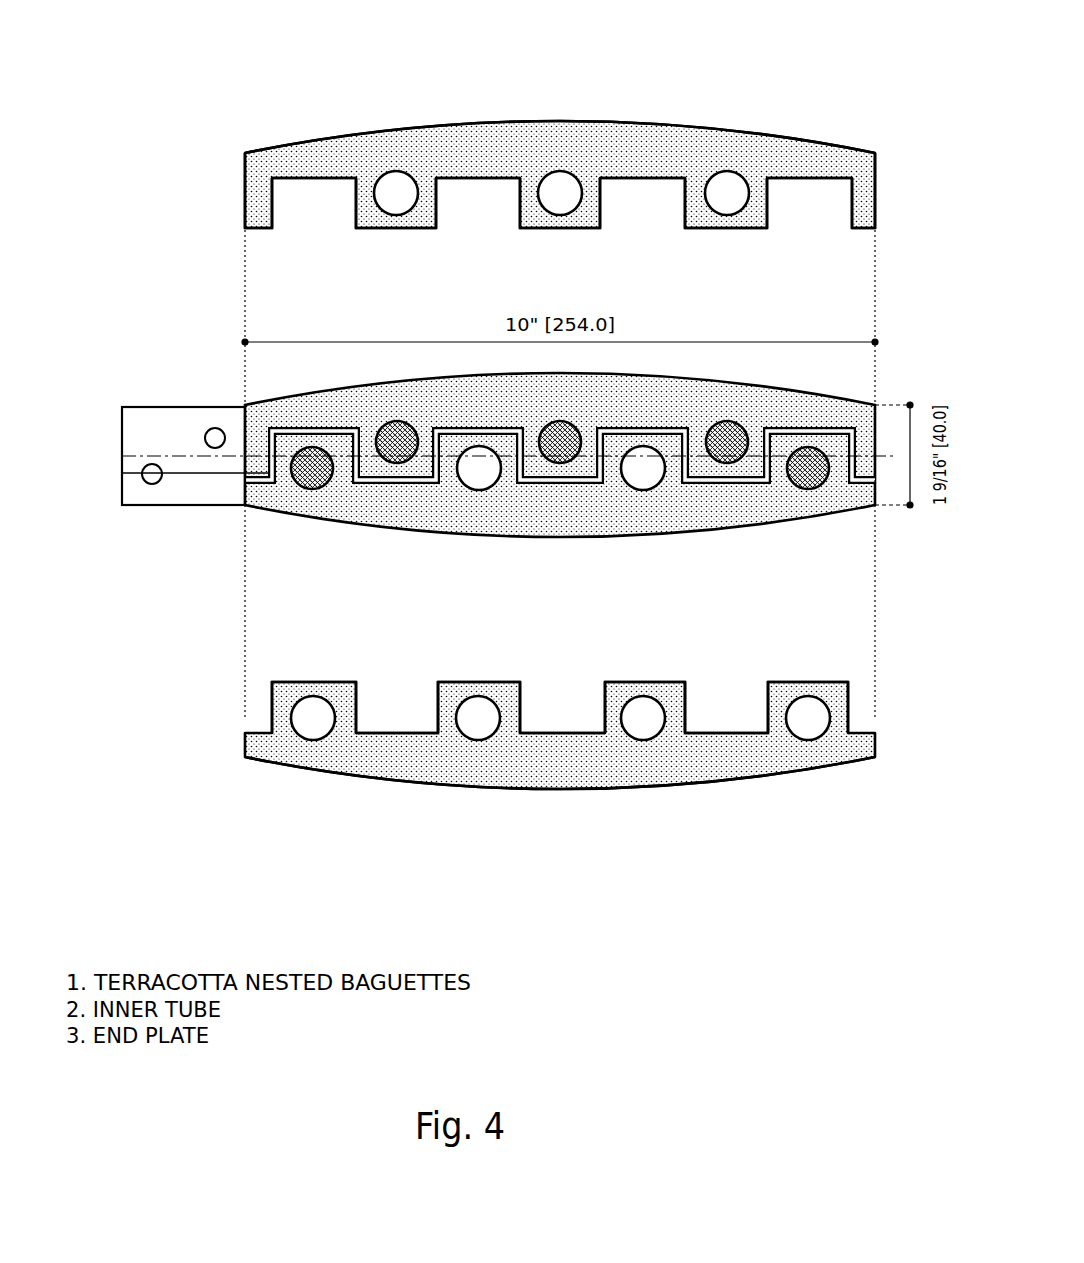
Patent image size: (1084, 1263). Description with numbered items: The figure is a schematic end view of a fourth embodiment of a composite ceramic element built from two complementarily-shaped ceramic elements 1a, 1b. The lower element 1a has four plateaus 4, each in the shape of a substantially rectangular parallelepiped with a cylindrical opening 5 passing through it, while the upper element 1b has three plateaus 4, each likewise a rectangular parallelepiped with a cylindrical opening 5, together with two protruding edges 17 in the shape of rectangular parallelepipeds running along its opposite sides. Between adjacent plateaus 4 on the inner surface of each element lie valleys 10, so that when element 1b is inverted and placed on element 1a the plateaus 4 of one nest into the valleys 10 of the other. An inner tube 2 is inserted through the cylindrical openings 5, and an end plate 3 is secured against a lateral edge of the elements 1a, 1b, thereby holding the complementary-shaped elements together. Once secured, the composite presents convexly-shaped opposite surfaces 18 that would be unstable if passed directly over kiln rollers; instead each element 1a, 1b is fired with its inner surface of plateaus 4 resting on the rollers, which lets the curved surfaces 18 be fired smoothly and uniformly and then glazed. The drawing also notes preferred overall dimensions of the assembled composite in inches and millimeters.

The ceramic element 1a is at (245, 743).
The ceramic element 1b is at (245, 188).
The inner tube 2 is at (122, 473).
The end plate 3 is at (122, 425).
The plateau 4 is at (400, 230).
The cylindrical opening 5 is at (394, 190).
The valley 10 is at (312, 178).
The protruding edge 17 is at (243, 214).
The convexly-shaped surface 18 is at (486, 123).